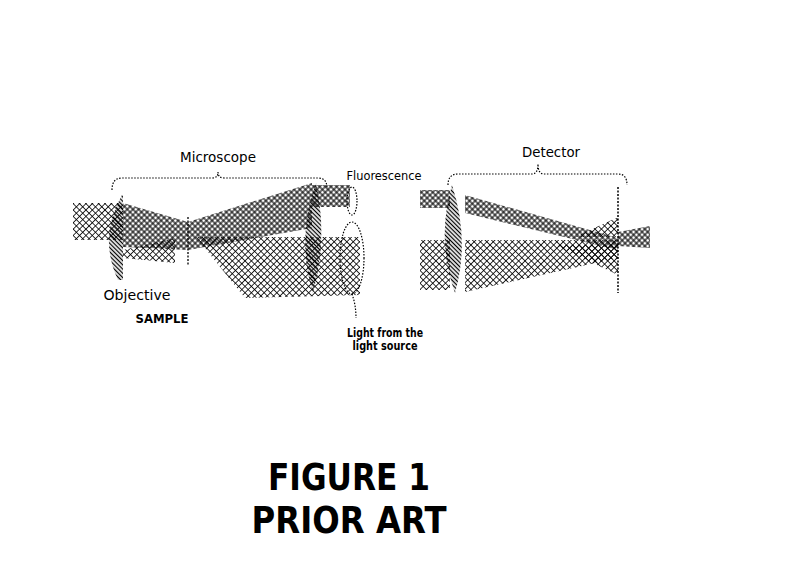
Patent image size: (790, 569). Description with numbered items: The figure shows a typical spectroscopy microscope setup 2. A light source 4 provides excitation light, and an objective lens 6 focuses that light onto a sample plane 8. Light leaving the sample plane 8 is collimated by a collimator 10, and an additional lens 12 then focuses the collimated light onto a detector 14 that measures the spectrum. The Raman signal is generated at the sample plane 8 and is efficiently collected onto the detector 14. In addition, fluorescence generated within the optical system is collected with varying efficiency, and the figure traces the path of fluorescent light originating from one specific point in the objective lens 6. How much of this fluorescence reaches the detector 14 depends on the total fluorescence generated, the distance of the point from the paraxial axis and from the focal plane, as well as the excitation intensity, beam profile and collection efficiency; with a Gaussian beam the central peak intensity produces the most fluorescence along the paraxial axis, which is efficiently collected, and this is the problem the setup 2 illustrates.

The spectroscopy microscope setup 2 is at (305, 93).
The light source 4 is at (110, 257).
The objective lens 6 is at (166, 220).
The sample plane 8 is at (188, 218).
The collimator 10 is at (308, 287).
The additional lens 12 is at (453, 287).
The detector 14 is at (617, 284).